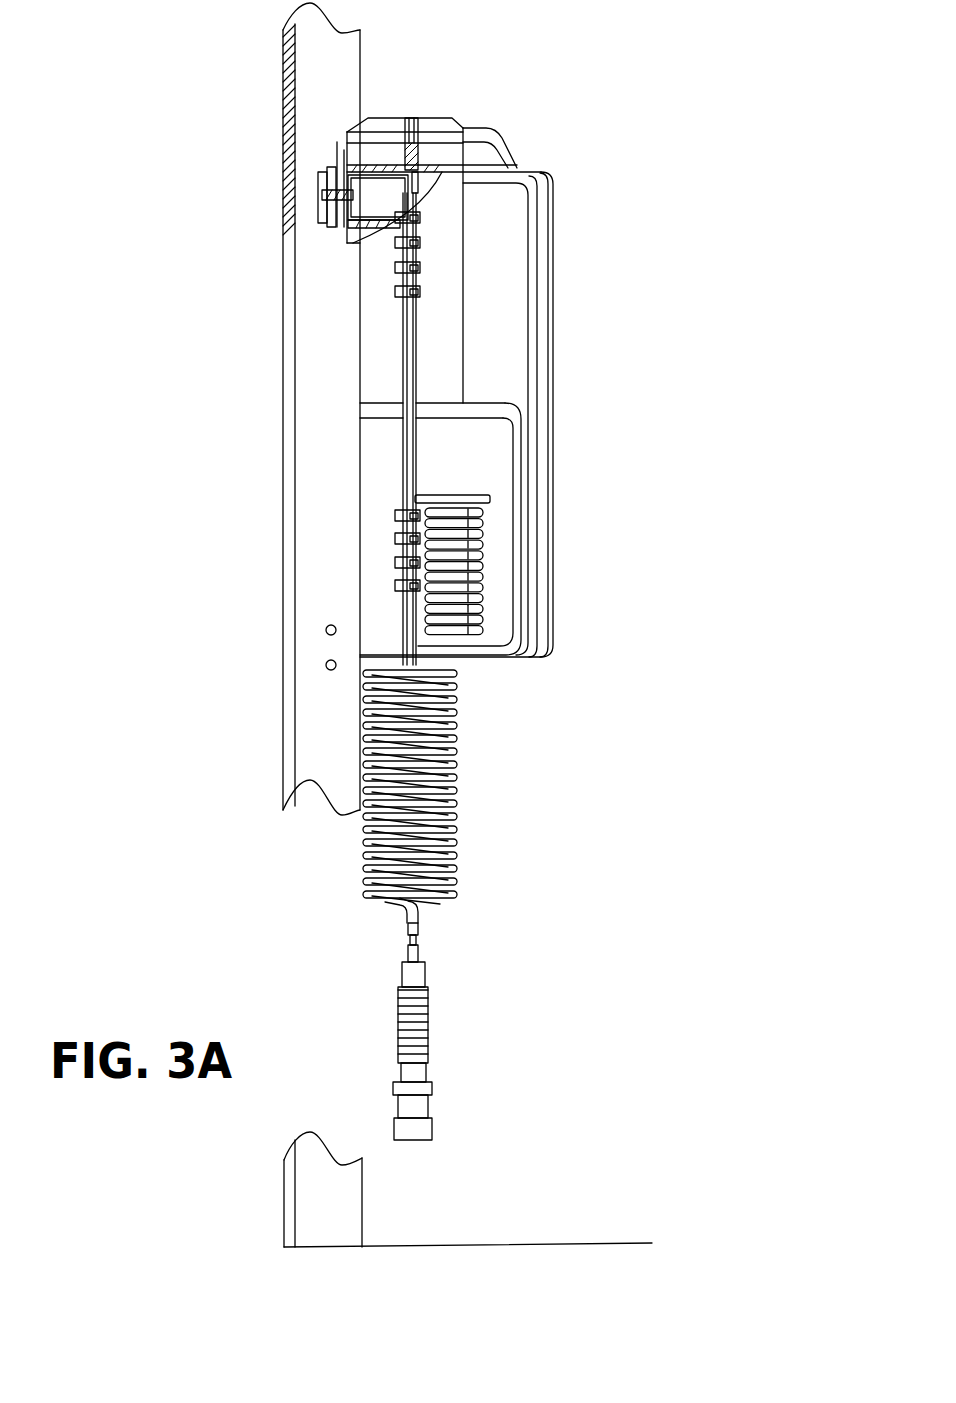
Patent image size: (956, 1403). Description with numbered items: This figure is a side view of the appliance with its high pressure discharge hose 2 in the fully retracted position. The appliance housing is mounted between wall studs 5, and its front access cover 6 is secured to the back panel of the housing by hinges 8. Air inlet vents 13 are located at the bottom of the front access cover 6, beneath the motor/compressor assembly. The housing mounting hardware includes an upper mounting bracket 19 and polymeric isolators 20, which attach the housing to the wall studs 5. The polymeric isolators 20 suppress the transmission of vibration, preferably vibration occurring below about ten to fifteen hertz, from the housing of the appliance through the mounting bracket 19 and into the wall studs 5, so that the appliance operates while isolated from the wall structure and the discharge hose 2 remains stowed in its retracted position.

The high pressure discharge hose 2 is at (458, 815).
The wall studs 5 is at (310, 499).
The front access cover 6 is at (483, 157).
The hinges 8 is at (418, 272).
The air inlet vents 13 is at (488, 523).
The upper mounting bracket 19 is at (322, 175).
The polymeric isolators 20 is at (335, 196).